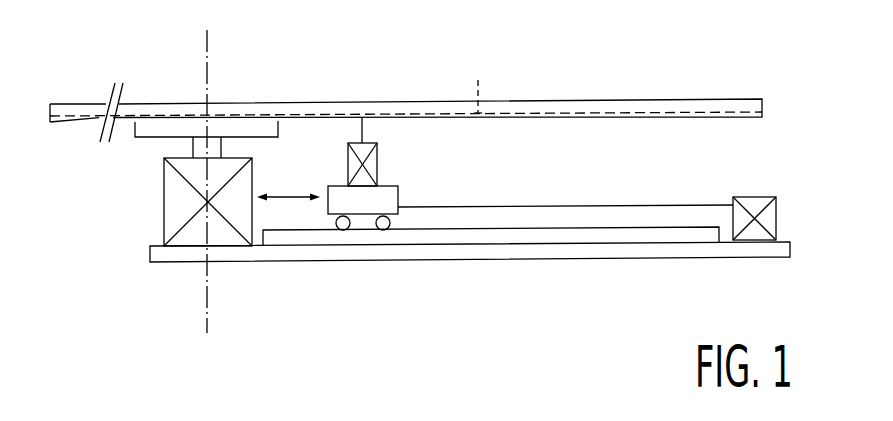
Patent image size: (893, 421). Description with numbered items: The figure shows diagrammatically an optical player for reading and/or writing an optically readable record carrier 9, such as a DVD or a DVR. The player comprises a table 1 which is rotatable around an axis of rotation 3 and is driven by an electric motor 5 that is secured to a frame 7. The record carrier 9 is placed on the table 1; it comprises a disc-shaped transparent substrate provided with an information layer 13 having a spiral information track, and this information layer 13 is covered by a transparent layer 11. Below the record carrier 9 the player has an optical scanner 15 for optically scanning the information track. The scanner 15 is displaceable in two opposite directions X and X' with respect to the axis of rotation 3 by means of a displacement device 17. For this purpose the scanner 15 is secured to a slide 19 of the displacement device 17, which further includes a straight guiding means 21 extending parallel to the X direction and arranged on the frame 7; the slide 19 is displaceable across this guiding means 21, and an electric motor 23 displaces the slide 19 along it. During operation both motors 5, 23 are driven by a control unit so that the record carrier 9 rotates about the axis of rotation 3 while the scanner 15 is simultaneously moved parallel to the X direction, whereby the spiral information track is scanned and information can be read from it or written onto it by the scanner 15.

The table 1 is at (158, 104).
The axis of rotation 3 is at (207, 38).
The electric motor 5 is at (172, 212).
The frame 7 is at (495, 252).
The optically readable record carrier 9 is at (406, 89).
The transparent layer 11 is at (532, 118).
The information layer 13 is at (480, 82).
The optical scanner 15 is at (377, 158).
The displacement device 17 is at (470, 216).
The slide 19 is at (398, 193).
The straight guiding means 21 is at (550, 236).
The electric motor 23 is at (757, 197).